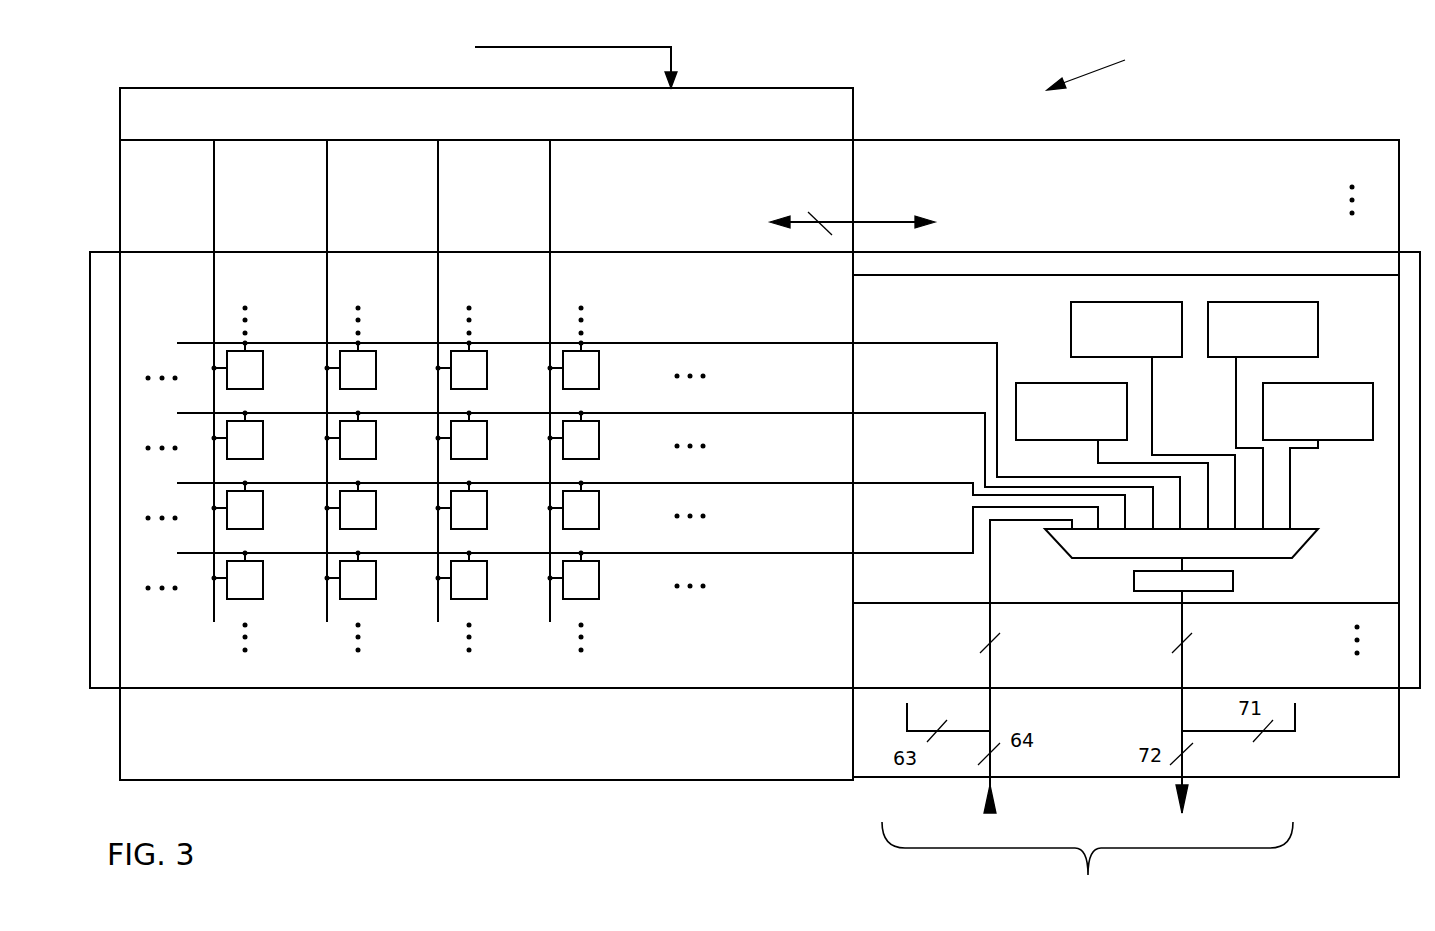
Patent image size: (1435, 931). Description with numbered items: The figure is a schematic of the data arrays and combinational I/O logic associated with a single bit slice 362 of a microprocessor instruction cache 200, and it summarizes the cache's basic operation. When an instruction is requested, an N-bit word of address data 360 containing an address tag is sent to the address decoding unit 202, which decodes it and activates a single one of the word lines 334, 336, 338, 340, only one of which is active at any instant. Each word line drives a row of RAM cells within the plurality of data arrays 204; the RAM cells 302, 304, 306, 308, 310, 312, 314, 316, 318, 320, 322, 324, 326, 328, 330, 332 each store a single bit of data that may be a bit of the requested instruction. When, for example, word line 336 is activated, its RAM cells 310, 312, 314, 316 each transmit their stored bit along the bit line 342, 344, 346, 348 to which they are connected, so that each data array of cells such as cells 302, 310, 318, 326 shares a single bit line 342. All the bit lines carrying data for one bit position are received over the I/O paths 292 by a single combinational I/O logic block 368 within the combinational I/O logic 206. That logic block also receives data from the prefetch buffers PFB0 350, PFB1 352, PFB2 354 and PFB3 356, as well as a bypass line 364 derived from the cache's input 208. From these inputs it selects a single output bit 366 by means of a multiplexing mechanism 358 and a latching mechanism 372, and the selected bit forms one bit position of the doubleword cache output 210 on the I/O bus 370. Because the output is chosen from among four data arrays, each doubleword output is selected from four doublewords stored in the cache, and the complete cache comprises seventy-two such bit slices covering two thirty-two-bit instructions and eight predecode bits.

The instruction cache 200 is at (1111, 63).
The address decoding unit 202 is at (853, 103).
The data arrays 204 is at (335, 780).
The combinational I/O logic 206 is at (1357, 777).
The instruction cache input 208 is at (987, 782).
The instruction cache output 210 is at (1180, 782).
The I/O path 292 is at (852, 207).
The RAM cell 302 is at (263, 382).
The RAM cell 304 is at (263, 452).
The RAM cell 306 is at (263, 522).
The RAM cell 308 is at (263, 592).
The RAM cell 310 is at (376, 382).
The RAM cell 312 is at (376, 452).
The RAM cell 314 is at (376, 522).
The RAM cell 316 is at (376, 592).
The RAM cell 318 is at (487, 382).
The RAM cell 320 is at (487, 452).
The RAM cell 322 is at (487, 522).
The RAM cell 324 is at (487, 592).
The RAM cell 326 is at (599, 382).
The RAM cell 328 is at (599, 452).
The RAM cell 330 is at (599, 522).
The RAM cell 332 is at (599, 592).
The word line 334 is at (213, 337).
The word line 336 is at (326, 335).
The word line 338 is at (437, 335).
The word line 340 is at (549, 335).
The bit line 342 is at (708, 343).
The bit line 344 is at (708, 413).
The bit line 346 is at (708, 483).
The bit line 348 is at (712, 553).
The prefetch buffer PFB0 350 is at (1060, 383).
The prefetch buffer PFB1 352 is at (1085, 302).
The prefetch buffer PFB2 354 is at (1255, 302).
The prefetch buffer PFB3 356 is at (1360, 445).
The multiplexing mechanism 358 is at (1277, 557).
The address data 360 is at (672, 52).
The bit slice 362 is at (348, 688).
The bypass line 364 is at (990, 667).
The output bit 366 is at (1182, 628).
The combinational I/O logic block 368 is at (1150, 275).
The I/O bus 370 is at (953, 848).
The latching mechanism 372 is at (1134, 580).